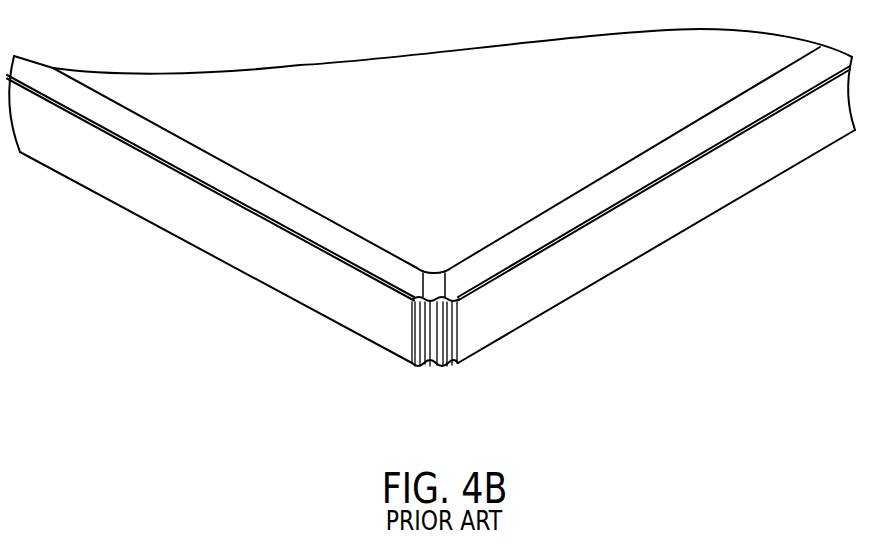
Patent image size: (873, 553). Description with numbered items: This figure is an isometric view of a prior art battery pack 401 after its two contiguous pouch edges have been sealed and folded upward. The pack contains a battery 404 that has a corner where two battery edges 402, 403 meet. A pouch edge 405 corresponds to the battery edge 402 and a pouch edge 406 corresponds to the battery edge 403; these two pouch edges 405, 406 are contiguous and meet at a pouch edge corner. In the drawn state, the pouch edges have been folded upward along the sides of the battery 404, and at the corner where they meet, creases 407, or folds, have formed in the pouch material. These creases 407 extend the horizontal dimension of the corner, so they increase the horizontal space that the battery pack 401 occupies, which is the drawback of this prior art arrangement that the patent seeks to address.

The battery pack 401 is at (594, 342).
The battery edge 402 is at (687, 143).
The battery edge 403 is at (277, 208).
The battery 404 is at (455, 63).
The pouch edge 405 is at (627, 247).
The pouch edge 406 is at (315, 297).
The creases 407 is at (447, 360).